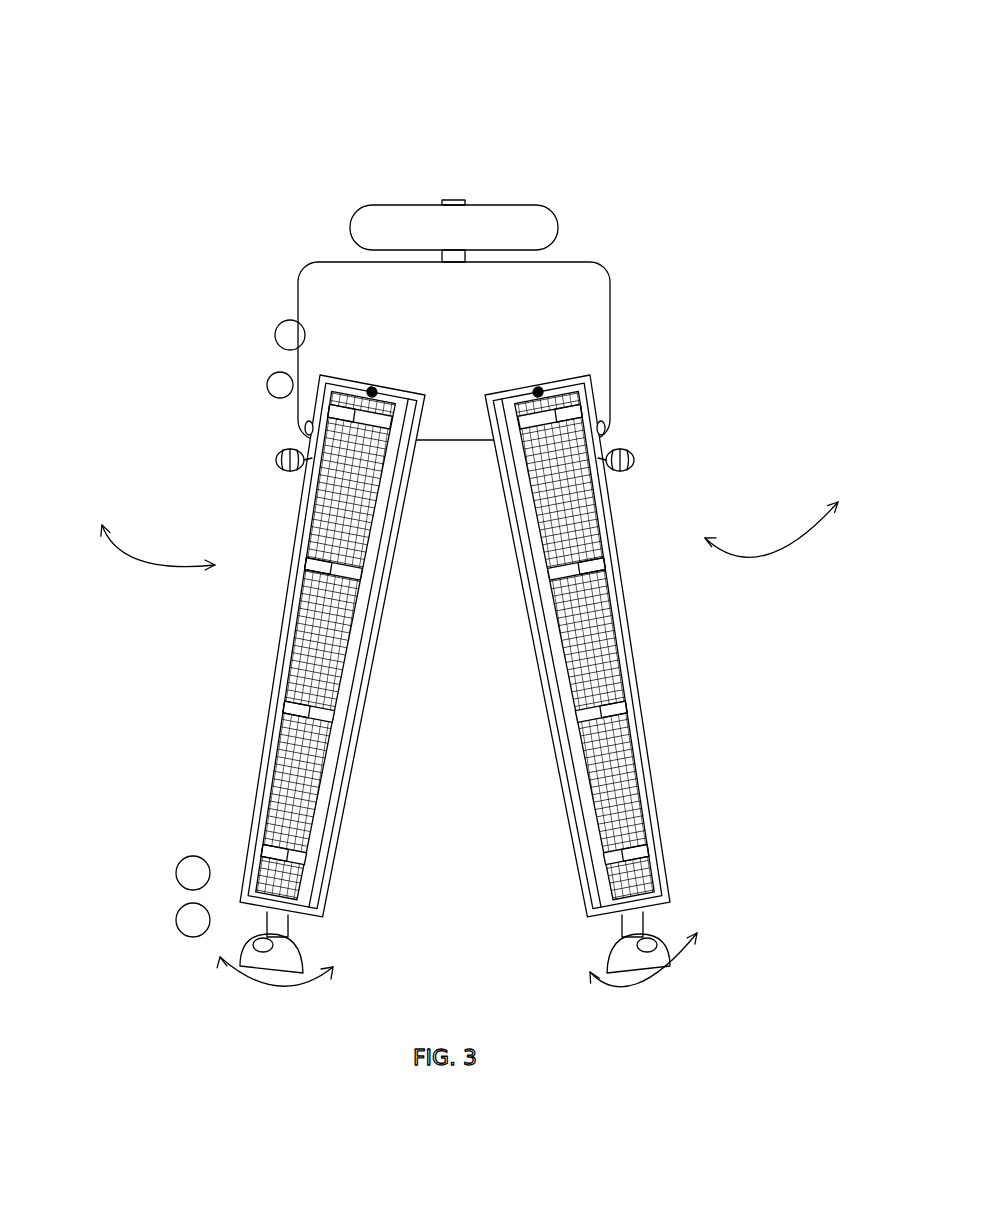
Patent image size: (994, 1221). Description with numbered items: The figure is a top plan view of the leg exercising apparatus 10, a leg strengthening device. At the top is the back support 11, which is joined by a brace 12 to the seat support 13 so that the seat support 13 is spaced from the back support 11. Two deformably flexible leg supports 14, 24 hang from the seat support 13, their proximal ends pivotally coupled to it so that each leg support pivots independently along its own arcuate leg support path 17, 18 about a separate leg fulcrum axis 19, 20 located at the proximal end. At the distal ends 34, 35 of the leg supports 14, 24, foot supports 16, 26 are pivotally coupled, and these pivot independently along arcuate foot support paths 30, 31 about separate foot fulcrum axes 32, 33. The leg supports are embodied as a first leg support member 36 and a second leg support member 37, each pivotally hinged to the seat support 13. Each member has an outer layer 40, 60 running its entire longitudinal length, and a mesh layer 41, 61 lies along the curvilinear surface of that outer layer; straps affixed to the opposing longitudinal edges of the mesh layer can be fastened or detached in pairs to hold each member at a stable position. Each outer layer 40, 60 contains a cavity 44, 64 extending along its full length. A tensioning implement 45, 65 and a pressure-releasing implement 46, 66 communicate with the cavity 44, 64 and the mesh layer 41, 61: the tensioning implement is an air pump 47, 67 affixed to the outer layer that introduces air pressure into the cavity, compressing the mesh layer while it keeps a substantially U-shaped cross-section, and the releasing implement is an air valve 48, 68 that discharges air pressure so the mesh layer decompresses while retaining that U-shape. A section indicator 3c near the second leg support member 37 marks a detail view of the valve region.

The leg exercising apparatus 10 is at (255, 130).
The back support 11 is at (537, 225).
The brace 12 is at (453, 257).
The seat support 13 is at (318, 303).
The leg support 14 is at (233, 540).
The foot support 16 is at (280, 963).
The arcuate leg support path 17 is at (130, 563).
The arcuate leg support path 18 is at (787, 555).
The leg fulcrum axis 19 is at (372, 388).
The leg fulcrum axis 20 is at (551, 385).
The leg support 24 is at (688, 535).
The foot support 26 is at (647, 963).
The arcuate foot support path 30 is at (295, 995).
The arcuate foot support path 31 is at (626, 1000).
The foot fulcrum axis 32 is at (287, 912).
The foot fulcrum axis 33 is at (643, 908).
The distal end 34 is at (318, 910).
The distal end 35 is at (590, 905).
The first leg support member 36 is at (250, 770).
The second leg support member 37 is at (655, 772).
The section view 3c indicator 3c is at (644, 416).
The outer layer 40 is at (405, 498).
The mesh layer 41 is at (378, 548).
The cavity 44 is at (308, 420).
The tensioning implement 45 is at (283, 485).
The pressure-releasing implement 46 is at (292, 428).
The air pump 47 is at (296, 378).
The air valve 48 is at (305, 427).
The outer layer 60 is at (530, 650).
The mesh layer 61 is at (557, 742).
The cavity 64 is at (608, 405).
The tensioning implement 65 is at (627, 487).
The pressure-releasing implement 66 is at (607, 423).
The air pump 67 is at (645, 456).
The air valve 68 is at (640, 418).